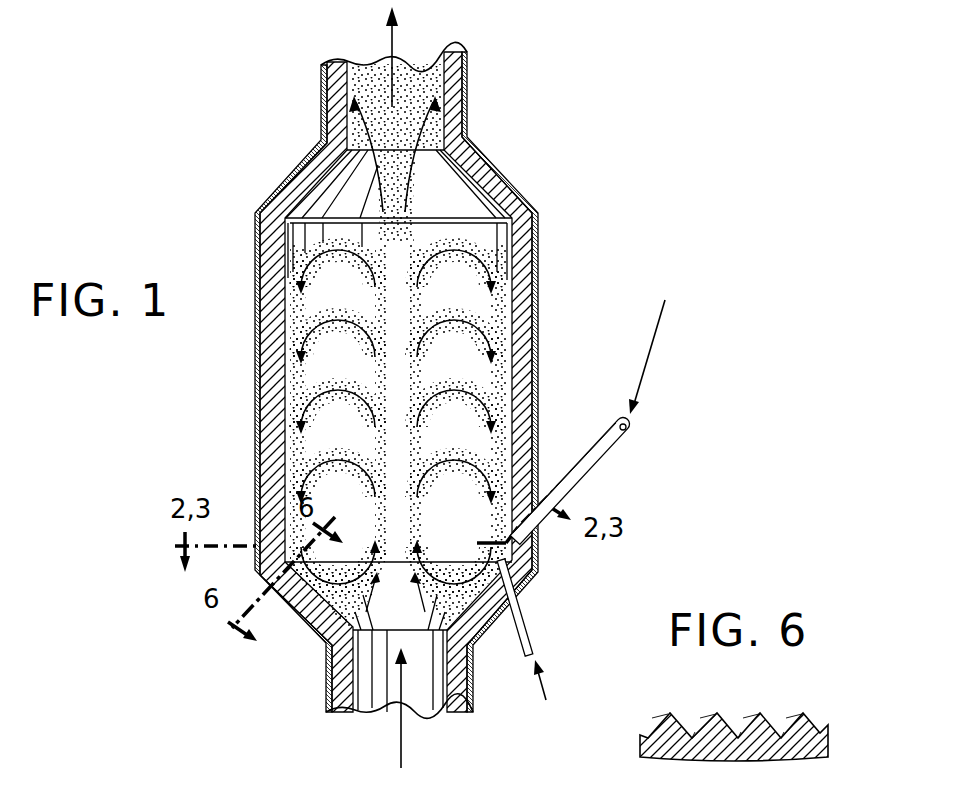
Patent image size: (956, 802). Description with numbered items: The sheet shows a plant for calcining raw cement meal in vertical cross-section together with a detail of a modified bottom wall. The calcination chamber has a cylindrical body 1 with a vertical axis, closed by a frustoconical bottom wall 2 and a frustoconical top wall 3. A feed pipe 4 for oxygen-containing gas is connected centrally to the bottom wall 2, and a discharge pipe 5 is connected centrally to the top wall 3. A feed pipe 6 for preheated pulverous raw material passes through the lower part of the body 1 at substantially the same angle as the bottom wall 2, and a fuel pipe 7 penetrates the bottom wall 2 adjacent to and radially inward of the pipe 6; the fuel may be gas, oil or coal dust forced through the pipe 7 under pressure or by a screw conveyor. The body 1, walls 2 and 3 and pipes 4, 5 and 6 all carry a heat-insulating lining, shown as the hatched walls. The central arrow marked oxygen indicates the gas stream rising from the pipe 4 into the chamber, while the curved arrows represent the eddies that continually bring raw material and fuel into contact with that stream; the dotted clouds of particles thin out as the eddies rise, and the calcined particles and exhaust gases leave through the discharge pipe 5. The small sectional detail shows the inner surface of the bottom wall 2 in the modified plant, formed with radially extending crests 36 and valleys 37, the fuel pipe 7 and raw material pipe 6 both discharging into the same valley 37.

In FIG. 1, the cylindrical body 1 is at (273, 285).
In FIG. 1, the bottom wall 2 is at (320, 620).
In FIG. 6, the bottom wall 2 is at (678, 758).
In FIG. 1, the top wall 3 is at (297, 176).
In FIG. 1, the feed pipe for oxygen containing gas 4 is at (340, 693).
In FIG. 1, the discharge pipe 5 is at (335, 84).
In FIG. 1, the feed pipe for preheated pulverous raw material 6 is at (619, 425).
In FIG. 1, the fuel pipe 7 is at (536, 632).
In FIG. 6, the crests 36 is at (717, 715).
In FIG. 6, the valleys 37 is at (805, 738).